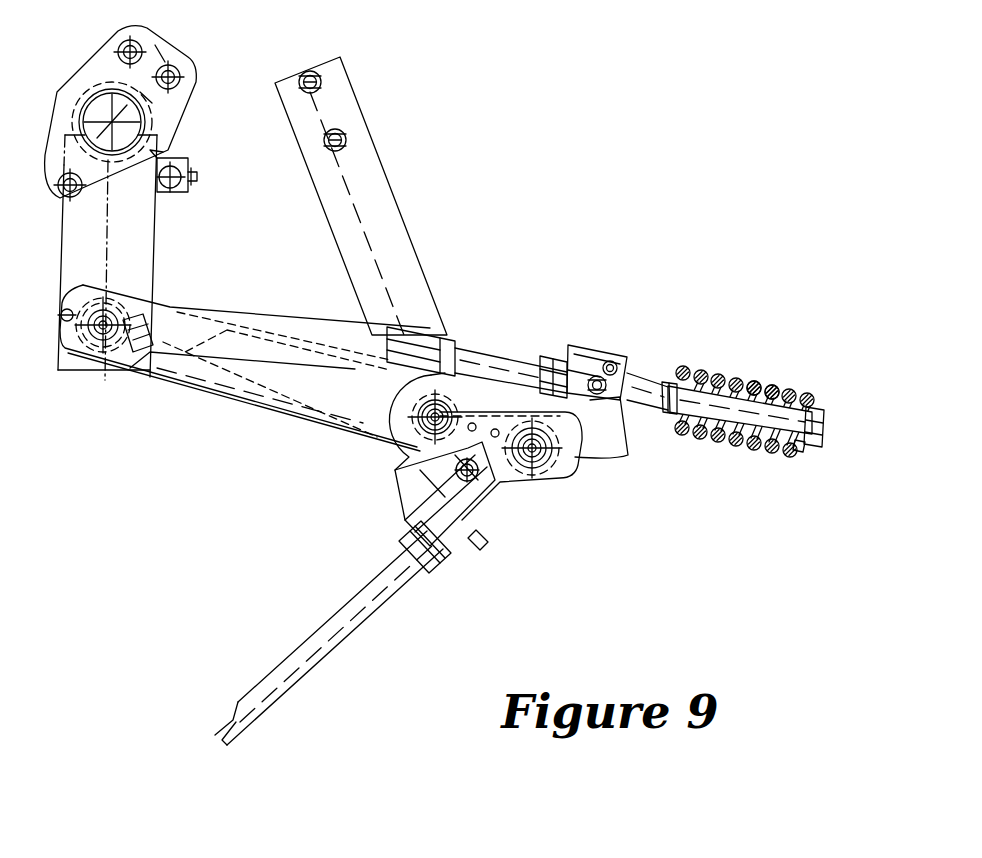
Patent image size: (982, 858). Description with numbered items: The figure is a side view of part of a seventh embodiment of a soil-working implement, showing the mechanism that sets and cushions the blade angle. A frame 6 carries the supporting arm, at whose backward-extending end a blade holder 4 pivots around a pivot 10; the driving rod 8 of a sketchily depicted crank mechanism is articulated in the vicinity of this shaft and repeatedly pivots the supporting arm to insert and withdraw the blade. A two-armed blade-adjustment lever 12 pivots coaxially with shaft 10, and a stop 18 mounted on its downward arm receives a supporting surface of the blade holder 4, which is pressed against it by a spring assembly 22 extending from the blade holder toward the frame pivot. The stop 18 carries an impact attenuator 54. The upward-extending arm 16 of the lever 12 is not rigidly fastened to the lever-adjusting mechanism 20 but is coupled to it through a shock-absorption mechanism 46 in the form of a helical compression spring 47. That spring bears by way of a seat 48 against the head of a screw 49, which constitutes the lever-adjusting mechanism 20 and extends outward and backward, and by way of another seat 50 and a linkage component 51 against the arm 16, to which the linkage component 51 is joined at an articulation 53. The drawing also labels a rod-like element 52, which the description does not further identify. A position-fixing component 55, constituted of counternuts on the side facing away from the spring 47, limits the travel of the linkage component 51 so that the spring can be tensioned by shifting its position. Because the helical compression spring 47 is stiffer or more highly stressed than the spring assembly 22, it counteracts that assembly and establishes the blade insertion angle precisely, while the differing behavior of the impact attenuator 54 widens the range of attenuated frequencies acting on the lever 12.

The blade holder 4 is at (480, 517).
The frame 6 is at (137, 240).
The driving rod 8 is at (363, 160).
The pivot 10 is at (558, 478).
The blade-adjustment lever 12 is at (575, 448).
The upward-extending arm 16 is at (612, 428).
The stop 18 is at (373, 503).
The lever-adjusting mechanism 20 is at (468, 294).
The spring assembly 22 is at (137, 373).
The shock-absorption mechanism 46 is at (827, 334).
The helical compression spring 47 is at (775, 384).
The seat 48 is at (817, 404).
The screw 49 is at (803, 445).
The seat 50 is at (683, 373).
The linkage component 51 is at (585, 357).
The rod 52 is at (498, 363).
The articulation 53 is at (590, 363).
The impact attenuator 54 is at (417, 510).
The position-fixing component 55 is at (555, 352).